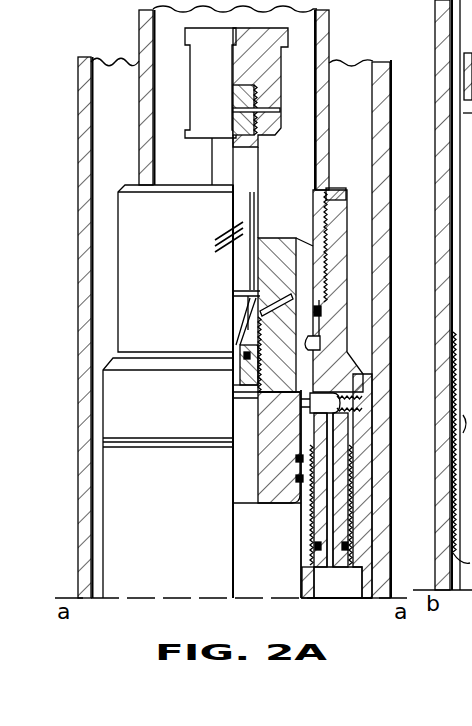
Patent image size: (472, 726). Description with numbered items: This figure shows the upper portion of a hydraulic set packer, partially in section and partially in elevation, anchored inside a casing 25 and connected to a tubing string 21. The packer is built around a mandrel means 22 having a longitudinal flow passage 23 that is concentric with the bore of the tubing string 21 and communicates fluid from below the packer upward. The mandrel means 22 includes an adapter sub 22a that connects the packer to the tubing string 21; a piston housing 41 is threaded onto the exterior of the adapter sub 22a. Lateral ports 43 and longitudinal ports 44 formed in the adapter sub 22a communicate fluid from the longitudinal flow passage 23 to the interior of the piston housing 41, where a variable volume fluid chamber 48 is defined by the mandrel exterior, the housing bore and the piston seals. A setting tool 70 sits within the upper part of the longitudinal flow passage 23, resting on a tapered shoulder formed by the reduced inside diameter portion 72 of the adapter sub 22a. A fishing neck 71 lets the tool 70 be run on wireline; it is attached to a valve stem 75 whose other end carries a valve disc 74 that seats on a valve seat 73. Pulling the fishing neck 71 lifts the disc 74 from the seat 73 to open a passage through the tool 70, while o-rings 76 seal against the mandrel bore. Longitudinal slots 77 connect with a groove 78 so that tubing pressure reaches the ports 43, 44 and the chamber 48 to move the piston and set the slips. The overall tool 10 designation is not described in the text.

The downhole tool 10 is at (358, 237).
The tubing string 21 is at (331, 45).
The mandrel means 22 is at (305, 579).
The adapter sub 22a is at (336, 373).
The longitudinal flow passage 23 is at (262, 557).
The casing 25 is at (85, 97).
The piston housing 41 is at (356, 572).
The lateral ports 43 is at (328, 431).
The longitudinal ports 44 is at (340, 504).
The variable volume fluid chamber 48 is at (335, 592).
The setting tool 70 is at (278, 236).
The fishing neck 71 is at (203, 68).
The reduced inside diameter portion 72 is at (312, 346).
The valve seat 73 is at (240, 380).
The valve disc 74 is at (240, 338).
The valve stem 75 is at (218, 152).
The o-rings 76 is at (296, 479).
The longitudinal slots 77 is at (346, 188).
The groove 78 is at (290, 412).